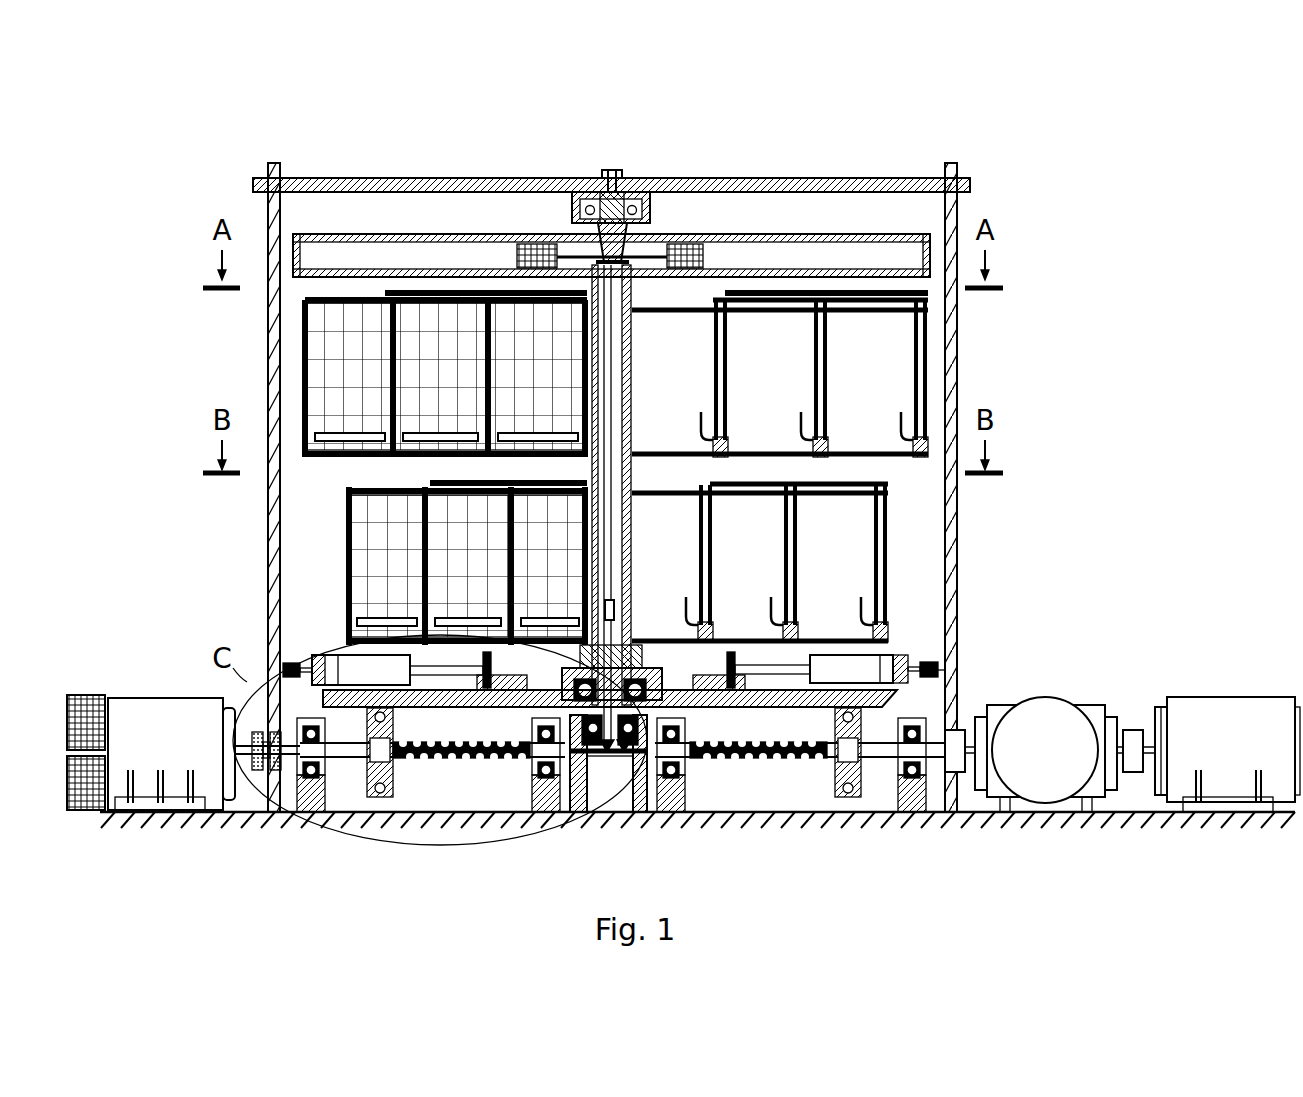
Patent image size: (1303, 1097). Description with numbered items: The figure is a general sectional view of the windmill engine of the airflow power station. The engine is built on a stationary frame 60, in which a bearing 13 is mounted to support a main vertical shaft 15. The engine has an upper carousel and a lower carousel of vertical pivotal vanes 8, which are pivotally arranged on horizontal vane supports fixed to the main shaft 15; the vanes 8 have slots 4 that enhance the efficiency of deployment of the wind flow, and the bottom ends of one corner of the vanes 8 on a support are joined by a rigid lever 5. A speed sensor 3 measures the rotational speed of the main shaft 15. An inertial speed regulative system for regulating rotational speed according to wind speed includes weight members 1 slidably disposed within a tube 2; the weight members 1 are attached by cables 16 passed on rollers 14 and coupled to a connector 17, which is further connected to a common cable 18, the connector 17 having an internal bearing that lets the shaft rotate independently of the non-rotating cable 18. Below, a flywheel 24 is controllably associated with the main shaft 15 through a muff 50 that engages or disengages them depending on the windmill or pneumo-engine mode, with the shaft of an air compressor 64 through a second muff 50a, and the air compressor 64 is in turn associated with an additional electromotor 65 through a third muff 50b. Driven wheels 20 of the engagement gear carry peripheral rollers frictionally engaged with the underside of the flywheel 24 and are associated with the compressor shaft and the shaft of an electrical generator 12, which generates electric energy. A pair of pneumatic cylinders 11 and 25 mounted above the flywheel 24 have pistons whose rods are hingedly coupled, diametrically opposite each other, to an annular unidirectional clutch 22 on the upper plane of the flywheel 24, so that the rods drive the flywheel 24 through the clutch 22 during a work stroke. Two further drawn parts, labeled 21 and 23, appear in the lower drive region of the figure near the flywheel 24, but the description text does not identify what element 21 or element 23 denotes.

The weight members 1 is at (667, 258).
The tube 2 is at (338, 257).
The speed sensor 3 is at (606, 178).
The slots 4 is at (538, 436).
The rigid lever 5 is at (458, 476).
The vertical pivotal vanes 8 is at (540, 588).
The pneumatic cylinder 11 is at (287, 665).
The electrical generator 12 is at (175, 745).
The bearing 13 is at (650, 210).
The rollers 14 is at (618, 280).
The main vertical shaft 15 is at (632, 383).
The cables 16 is at (612, 430).
The connector 17 is at (617, 620).
The common cable 18 is at (626, 645).
The driven wheels 20 is at (393, 775).
The base column 21 is at (657, 805).
The unidirectional clutch 22 is at (700, 705).
The slider 23 is at (730, 700).
The flywheel 24 is at (775, 705).
The pneumatic cylinder 25 is at (845, 720).
The muff 50 is at (822, 636).
The second muff 50a is at (958, 742).
The third muff 50b is at (1137, 747).
The stationary frame 60 is at (957, 697).
The air compressor 64 is at (1060, 773).
The electromotor 65 is at (1202, 740).